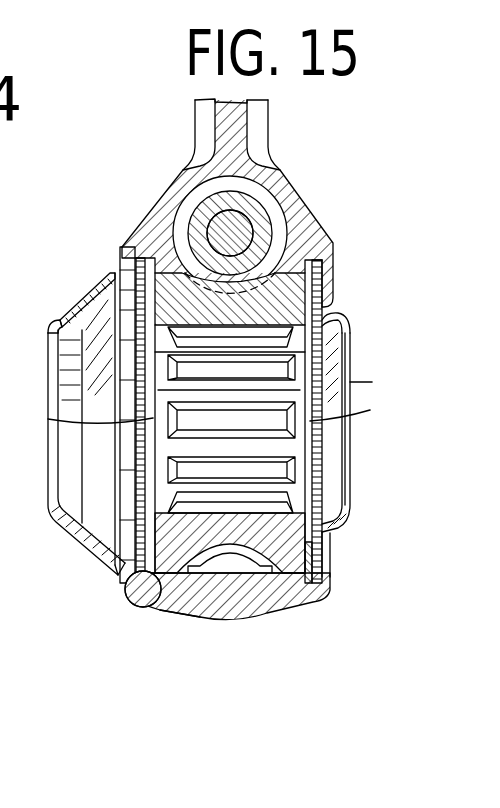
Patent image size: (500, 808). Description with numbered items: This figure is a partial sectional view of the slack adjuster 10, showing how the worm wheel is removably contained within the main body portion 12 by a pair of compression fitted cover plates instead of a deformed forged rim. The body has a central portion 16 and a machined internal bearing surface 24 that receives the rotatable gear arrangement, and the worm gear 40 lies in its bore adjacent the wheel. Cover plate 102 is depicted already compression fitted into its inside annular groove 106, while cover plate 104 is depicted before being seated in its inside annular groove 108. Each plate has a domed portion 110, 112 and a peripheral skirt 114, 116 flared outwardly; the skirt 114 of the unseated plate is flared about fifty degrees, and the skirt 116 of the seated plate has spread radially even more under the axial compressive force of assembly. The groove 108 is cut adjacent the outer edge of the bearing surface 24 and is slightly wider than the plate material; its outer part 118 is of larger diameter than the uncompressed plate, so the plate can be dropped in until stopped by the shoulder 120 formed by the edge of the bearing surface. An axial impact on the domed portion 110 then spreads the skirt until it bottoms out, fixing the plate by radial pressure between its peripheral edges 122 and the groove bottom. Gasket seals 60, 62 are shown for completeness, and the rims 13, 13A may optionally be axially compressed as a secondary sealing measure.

The slack adjuster 10 is at (172, 152).
The main body portion 12 is at (198, 608).
The rim 13 is at (335, 243).
The rim 13A is at (121, 244).
The central portion 16 is at (289, 193).
The internal bearing surface 24 is at (240, 574).
The worm gear 40 is at (203, 215).
The gasket seal 60 is at (310, 421).
The gasket seal 62 is at (52, 421).
The cover plate 102 is at (352, 462).
The cover plate 104 is at (48, 490).
The inside annular groove 106 is at (313, 610).
The inside annular groove 108 is at (137, 601).
The domed portion 110 is at (62, 318).
The domed portion 112 is at (338, 300).
The peripheral skirt 114 is at (100, 286).
The peripheral skirt 116 is at (338, 280).
The outer part of annular groove 118 is at (130, 572).
The shoulder 120 is at (160, 603).
The cover plate peripheral edges 122 is at (117, 574).